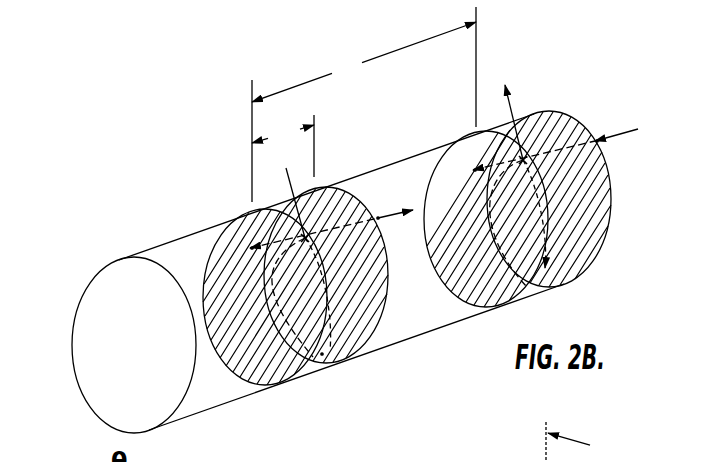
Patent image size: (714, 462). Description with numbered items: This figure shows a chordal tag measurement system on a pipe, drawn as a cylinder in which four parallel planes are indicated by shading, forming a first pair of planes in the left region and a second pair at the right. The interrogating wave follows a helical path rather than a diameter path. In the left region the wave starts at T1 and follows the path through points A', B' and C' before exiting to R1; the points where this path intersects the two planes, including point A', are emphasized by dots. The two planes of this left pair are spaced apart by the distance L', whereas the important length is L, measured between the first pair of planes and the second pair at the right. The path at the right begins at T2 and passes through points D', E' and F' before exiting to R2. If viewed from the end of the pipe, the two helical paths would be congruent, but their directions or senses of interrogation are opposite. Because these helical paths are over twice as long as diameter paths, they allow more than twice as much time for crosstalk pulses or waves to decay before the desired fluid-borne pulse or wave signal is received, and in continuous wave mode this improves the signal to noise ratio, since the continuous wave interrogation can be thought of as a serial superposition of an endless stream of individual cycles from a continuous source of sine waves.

The left transducer T1 is at (286, 203).
The right transducer T2 is at (621, 147).
The left receiver R1 is at (335, 232).
The right receiver R2 is at (534, 121).
The length between plane pairs L is at (364, 104).
The plane spacing L' is at (283, 146).
The point A' is at (314, 221).
The point B' is at (335, 340).
The point C' is at (243, 250).
The point D' is at (600, 129).
The point E' is at (465, 173).
The point F' is at (546, 217).